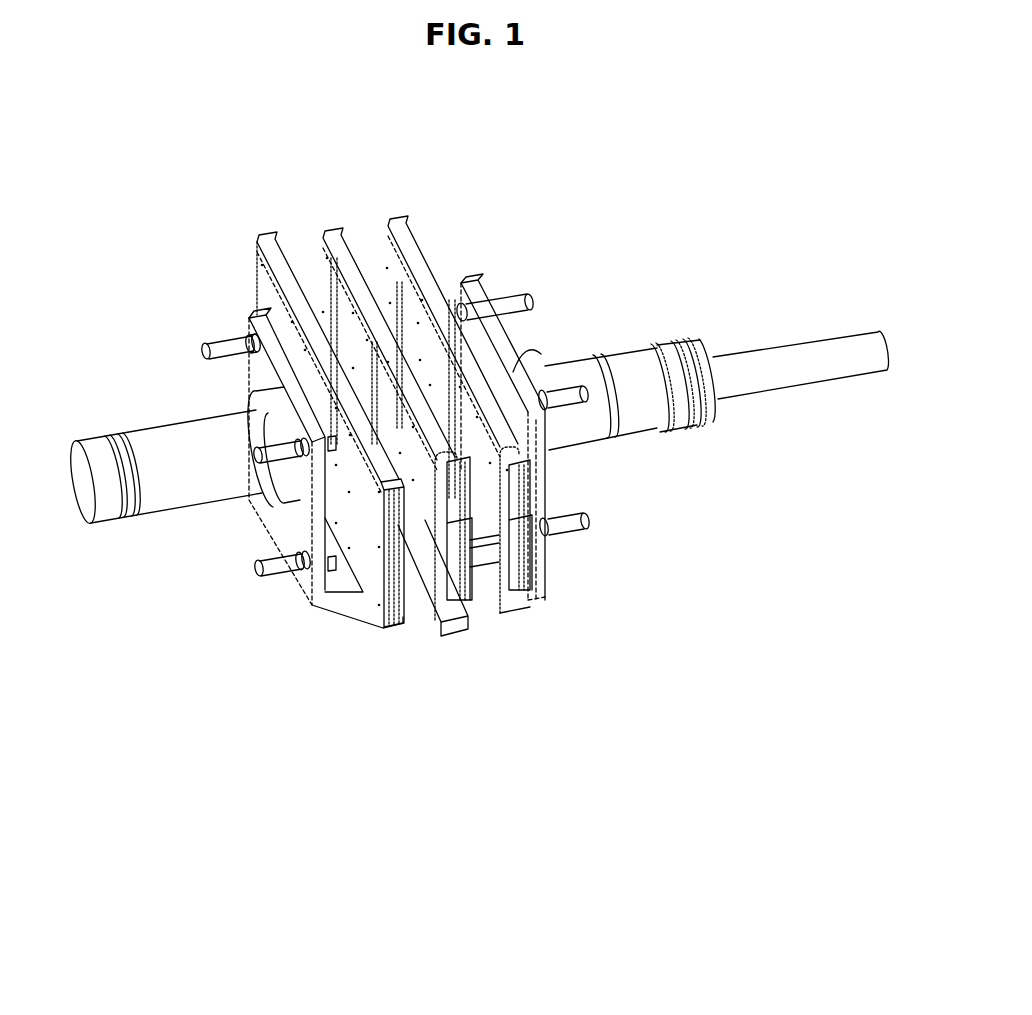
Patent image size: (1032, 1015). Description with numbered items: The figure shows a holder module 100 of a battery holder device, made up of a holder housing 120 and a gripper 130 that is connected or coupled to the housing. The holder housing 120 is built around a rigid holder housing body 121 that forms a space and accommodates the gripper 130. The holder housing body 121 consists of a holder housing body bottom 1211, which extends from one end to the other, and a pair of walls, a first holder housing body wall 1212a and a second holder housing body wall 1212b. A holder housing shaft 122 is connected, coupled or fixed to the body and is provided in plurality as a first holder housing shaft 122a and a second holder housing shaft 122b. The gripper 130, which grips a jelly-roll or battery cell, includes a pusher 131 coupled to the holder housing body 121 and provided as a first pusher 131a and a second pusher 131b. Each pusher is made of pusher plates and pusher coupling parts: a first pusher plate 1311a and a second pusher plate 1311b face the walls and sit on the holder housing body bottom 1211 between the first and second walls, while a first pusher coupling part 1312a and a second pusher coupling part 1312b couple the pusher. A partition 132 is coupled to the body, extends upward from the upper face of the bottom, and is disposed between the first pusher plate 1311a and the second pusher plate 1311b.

The holder module 100 is at (176, 135).
The holder housing 120 is at (710, 786).
The holder housing body 121 is at (710, 870).
The holder housing body bottom 1211 is at (343, 597).
The first holder housing body wall 1212a is at (287, 537).
The second holder housing body wall 1212b is at (464, 282).
The holder housing shaft 122 is at (477, 377).
The first holder housing shaft 122a is at (150, 447).
The second holder housing shaft 122b is at (630, 358).
The gripper 130 is at (540, 786).
The pusher 131 is at (540, 870).
The first pusher 131a is at (168, 786).
The second pusher 131b is at (168, 868).
The first pusher plate 1311a is at (263, 240).
The second pusher plate 1311b is at (388, 222).
The first pusher coupling part 1312a is at (203, 340).
The second pusher coupling part 1312b is at (572, 527).
The partition 132 is at (462, 628).